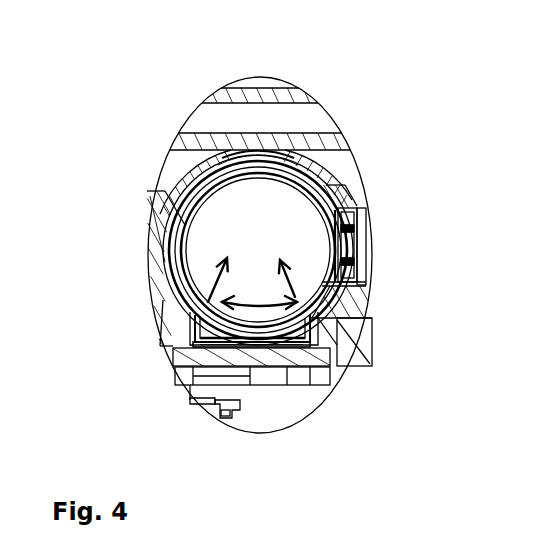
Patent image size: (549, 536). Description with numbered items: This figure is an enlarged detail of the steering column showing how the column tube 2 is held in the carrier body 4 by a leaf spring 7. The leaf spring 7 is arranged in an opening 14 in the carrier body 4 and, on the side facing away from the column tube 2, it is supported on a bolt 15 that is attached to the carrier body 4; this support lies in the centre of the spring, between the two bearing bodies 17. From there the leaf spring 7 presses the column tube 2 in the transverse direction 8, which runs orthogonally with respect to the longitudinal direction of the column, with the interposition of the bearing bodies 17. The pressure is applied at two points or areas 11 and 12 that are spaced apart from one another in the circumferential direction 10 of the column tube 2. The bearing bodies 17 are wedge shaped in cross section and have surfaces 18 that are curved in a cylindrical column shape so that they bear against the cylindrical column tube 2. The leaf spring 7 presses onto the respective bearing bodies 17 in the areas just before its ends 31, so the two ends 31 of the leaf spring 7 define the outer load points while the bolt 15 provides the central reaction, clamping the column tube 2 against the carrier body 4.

The column tube 2 is at (338, 248).
The carrier body 4 is at (327, 323).
The leaf spring 7 is at (247, 348).
The transverse direction 8 is at (213, 262).
The circumferential direction 10 is at (262, 298).
The point or area 11 is at (152, 182).
The point or area 12 is at (358, 196).
The opening 14 is at (308, 378).
The bolt 15 is at (205, 405).
The bearing bodies 17 is at (322, 345).
The surfaces 18 is at (503, 535).
The ends 31 is at (200, 348).